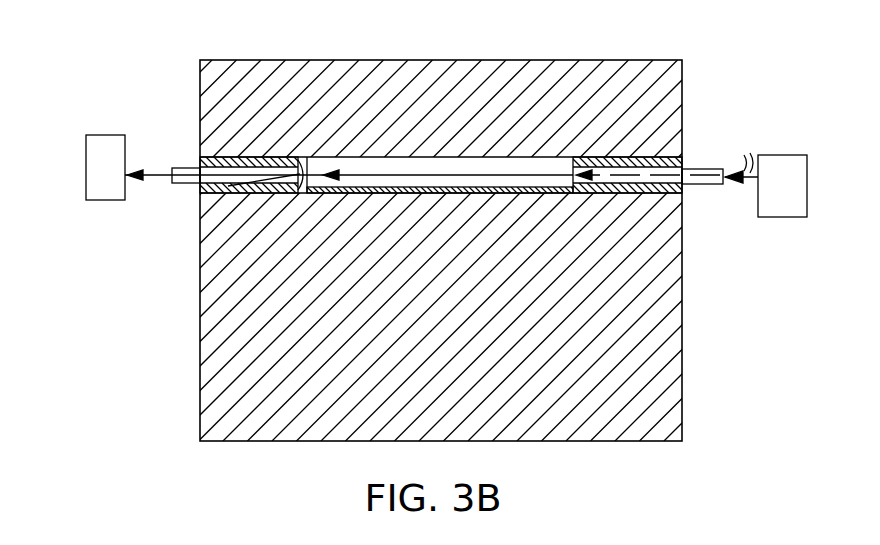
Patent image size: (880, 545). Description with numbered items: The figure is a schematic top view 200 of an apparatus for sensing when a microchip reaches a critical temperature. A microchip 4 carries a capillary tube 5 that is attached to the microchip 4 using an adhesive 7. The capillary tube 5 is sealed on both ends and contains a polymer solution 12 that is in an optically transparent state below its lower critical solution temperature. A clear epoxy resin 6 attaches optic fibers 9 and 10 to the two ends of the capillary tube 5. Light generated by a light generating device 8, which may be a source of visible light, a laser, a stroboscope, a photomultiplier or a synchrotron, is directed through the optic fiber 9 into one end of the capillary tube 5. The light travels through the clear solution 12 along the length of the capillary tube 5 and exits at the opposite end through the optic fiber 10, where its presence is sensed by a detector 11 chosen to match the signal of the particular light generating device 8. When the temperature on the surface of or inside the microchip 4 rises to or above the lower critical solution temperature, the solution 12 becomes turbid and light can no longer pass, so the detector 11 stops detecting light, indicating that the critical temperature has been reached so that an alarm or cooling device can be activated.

The top view of the apparatus 200 is at (168, 407).
The microchip 4 is at (672, 350).
The capillary tube 5 is at (558, 171).
The clear epoxy resin 6 is at (296, 164).
The adhesive 7 is at (608, 162).
The light generating device 8 is at (808, 177).
The optic fiber 9 is at (728, 170).
The optic fiber 10 is at (170, 166).
The detector 11 is at (86, 175).
The polymer solution 12 is at (222, 198).